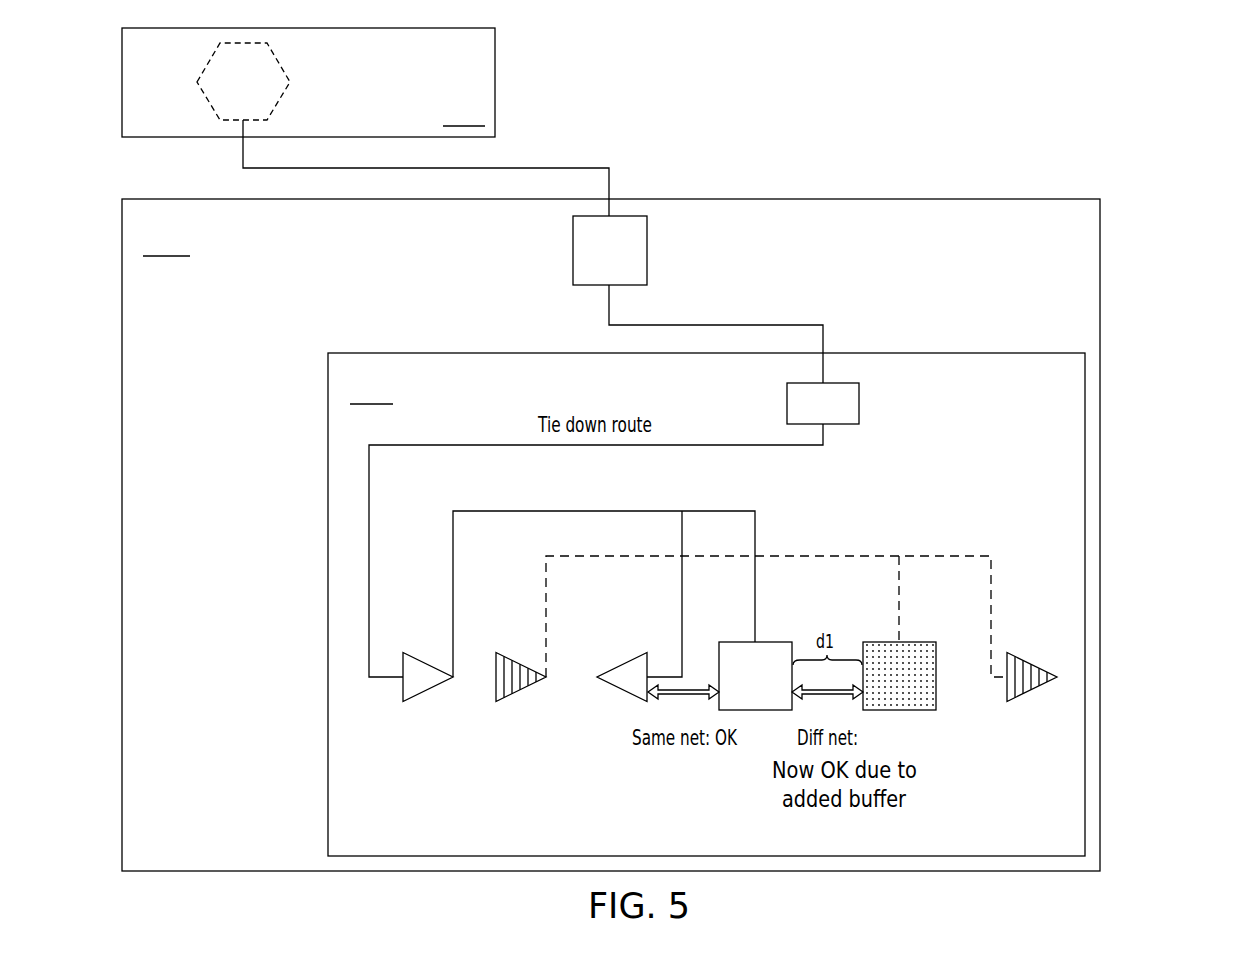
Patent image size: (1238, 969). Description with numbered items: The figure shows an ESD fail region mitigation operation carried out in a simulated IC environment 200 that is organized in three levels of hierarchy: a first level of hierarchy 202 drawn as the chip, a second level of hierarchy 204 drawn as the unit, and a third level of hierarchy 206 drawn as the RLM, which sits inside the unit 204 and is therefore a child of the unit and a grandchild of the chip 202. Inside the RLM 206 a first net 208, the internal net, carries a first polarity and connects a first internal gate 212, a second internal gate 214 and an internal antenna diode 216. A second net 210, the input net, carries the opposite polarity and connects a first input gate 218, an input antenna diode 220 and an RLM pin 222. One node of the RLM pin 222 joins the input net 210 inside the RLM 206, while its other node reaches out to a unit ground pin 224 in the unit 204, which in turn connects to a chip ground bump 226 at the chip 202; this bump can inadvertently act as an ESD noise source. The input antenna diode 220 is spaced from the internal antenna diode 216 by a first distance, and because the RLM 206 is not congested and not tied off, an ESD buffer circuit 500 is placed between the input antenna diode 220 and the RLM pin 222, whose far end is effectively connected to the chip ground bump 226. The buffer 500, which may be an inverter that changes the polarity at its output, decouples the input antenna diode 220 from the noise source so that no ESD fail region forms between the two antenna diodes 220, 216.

The simulated IC environment 200 is at (1137, 110).
The first level of hierarchy 202 is at (122, 86).
The second level of hierarchy 204 is at (122, 527).
The third level of hierarchy 206 is at (328, 582).
The first net 208 is at (797, 575).
The second net 210 is at (755, 521).
The first internal gate 212 is at (522, 660).
The second internal gate 214 is at (1032, 655).
The internal antenna diode 216 is at (913, 642).
The first input gate 218 is at (625, 660).
The input antenna diode 220 is at (740, 642).
The RLM pin 222 is at (860, 400).
The unit ground pin 224 is at (573, 250).
The chip ground bump 226 is at (232, 123).
The ESD buffer circuit 500 is at (427, 652).